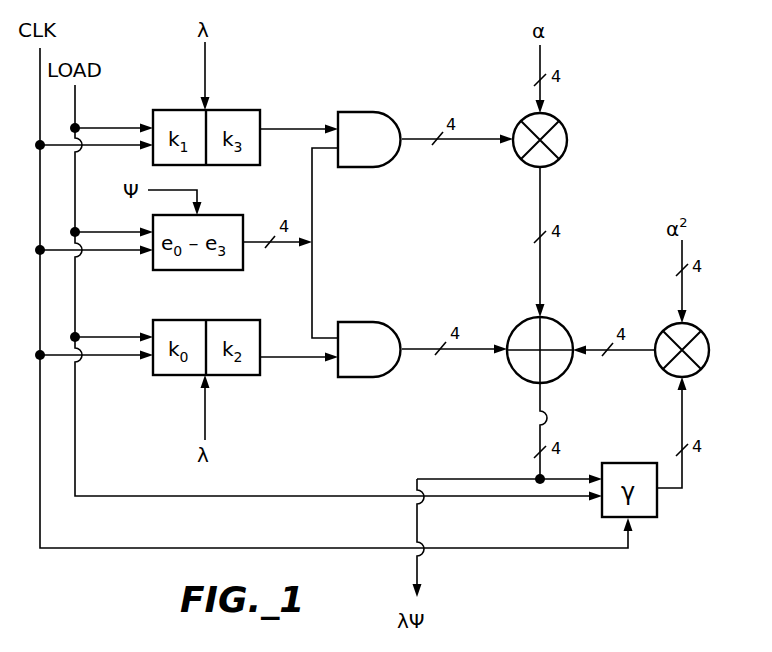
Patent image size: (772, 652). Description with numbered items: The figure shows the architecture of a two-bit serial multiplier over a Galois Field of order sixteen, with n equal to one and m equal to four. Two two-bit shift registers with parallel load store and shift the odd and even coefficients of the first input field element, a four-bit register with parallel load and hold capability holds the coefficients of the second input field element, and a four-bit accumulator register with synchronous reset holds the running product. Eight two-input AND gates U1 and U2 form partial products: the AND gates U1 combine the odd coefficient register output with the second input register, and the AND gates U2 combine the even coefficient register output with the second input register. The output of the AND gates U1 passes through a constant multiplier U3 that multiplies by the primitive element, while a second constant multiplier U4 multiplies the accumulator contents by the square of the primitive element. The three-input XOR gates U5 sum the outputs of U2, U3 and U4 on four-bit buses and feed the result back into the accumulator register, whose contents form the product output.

The AND gates U1 is at (369, 126).
The AND gates U2 is at (369, 336).
The constant Galois Field multiplier U3 is at (545, 131).
The constant Galois Field multiplier U4 is at (687, 341).
The XOR gates U5 is at (543, 339).